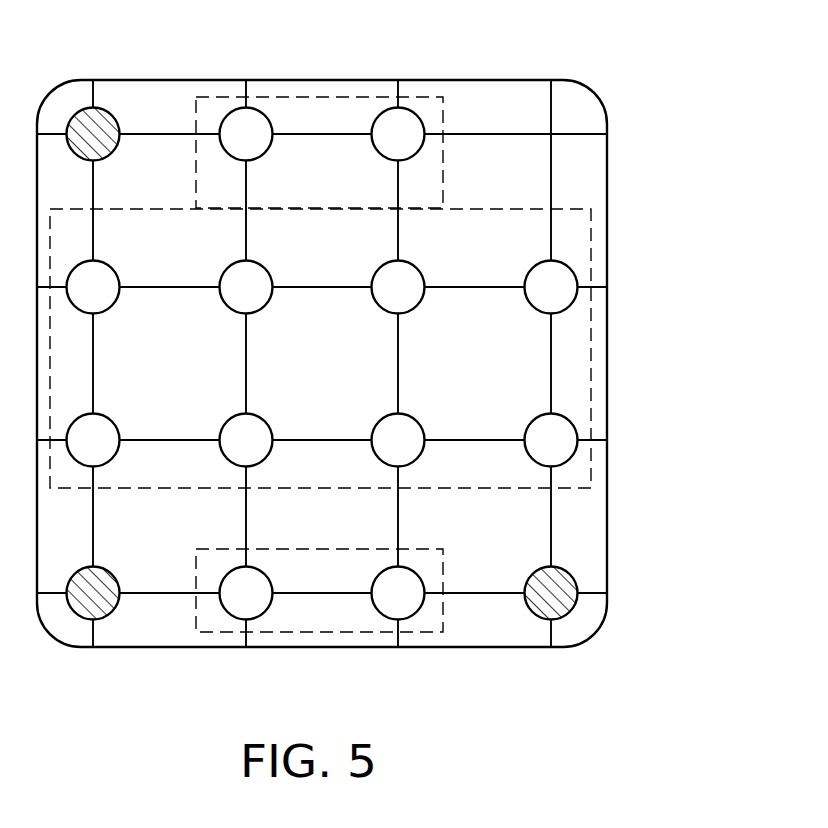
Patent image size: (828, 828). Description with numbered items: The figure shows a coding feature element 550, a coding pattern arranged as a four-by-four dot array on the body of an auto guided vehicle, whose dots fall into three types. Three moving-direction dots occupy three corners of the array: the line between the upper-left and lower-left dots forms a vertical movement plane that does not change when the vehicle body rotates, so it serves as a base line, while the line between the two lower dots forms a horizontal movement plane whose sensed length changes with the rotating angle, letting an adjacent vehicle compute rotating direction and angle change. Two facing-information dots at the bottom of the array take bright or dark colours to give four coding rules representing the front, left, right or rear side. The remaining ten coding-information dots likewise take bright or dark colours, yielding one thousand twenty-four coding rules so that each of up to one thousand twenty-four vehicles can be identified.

The coding feature element 550 is at (502, 80).